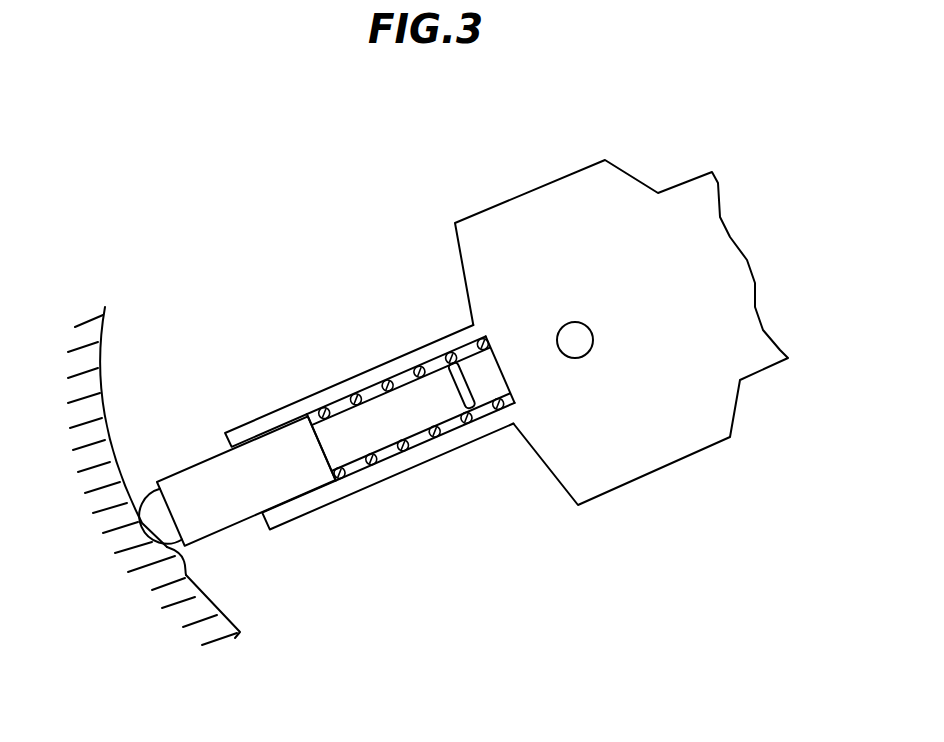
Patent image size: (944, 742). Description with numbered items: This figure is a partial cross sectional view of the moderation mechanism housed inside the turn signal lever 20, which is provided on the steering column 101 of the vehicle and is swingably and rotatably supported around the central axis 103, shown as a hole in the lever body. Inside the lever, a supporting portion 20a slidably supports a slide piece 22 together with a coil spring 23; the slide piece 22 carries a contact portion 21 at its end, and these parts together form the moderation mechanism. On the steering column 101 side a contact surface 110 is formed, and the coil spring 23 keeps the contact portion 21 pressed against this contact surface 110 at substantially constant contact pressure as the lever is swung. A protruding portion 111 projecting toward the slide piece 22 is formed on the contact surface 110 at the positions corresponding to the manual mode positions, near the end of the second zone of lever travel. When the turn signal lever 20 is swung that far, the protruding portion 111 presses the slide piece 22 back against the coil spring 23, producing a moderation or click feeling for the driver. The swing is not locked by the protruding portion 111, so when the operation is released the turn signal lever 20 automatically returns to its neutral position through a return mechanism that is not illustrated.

The turn signal lever 20 is at (616, 180).
The supporting portion 20a is at (393, 367).
The contact portion 21 is at (157, 522).
The slide piece 22 is at (288, 496).
The coil spring 23 is at (433, 435).
The steering column 101 is at (178, 615).
The central axis 103 is at (578, 323).
The contact surface 110 is at (103, 332).
The protruding portion 111 is at (188, 570).